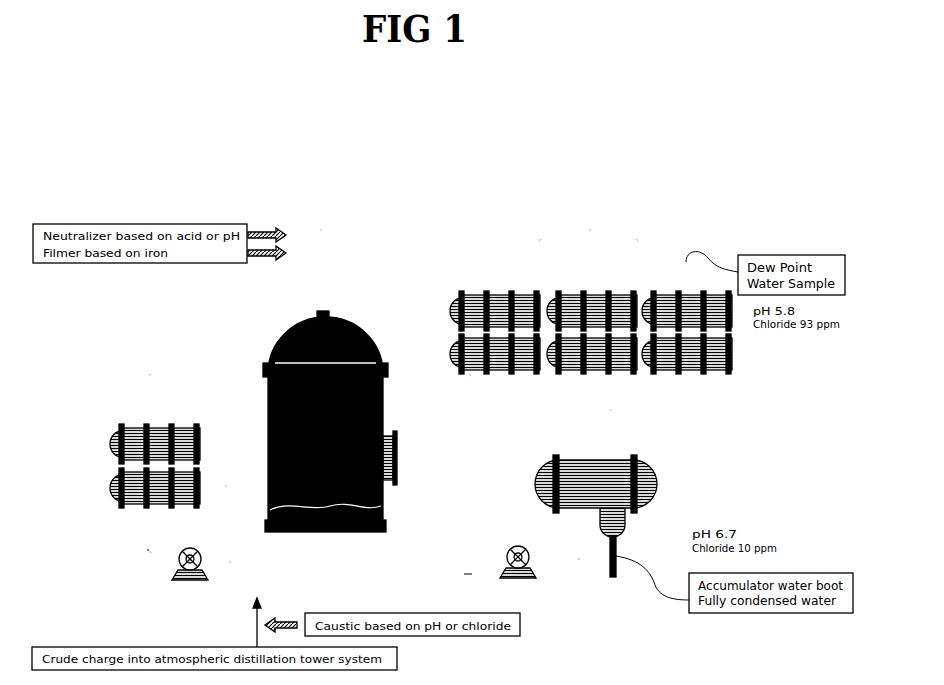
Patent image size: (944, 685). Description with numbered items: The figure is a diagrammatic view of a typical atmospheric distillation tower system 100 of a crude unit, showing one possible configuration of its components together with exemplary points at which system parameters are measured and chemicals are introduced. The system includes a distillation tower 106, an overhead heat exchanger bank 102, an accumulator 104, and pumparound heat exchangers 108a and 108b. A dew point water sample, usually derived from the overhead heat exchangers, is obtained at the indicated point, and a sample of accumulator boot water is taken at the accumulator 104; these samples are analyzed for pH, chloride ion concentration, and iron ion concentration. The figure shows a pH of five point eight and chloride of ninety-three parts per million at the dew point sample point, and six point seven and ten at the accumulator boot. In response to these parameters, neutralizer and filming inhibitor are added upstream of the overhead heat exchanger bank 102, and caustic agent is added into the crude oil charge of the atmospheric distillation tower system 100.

The atmospheric distillation tower system 100 is at (695, 203).
The overhead heat exchanger bank 102 is at (452, 298).
The accumulator 104 is at (535, 485).
The distillation tower 106 is at (330, 534).
The pumparound heat exchanger 108a is at (110, 430).
The pumparound heat exchanger 108b is at (110, 505).